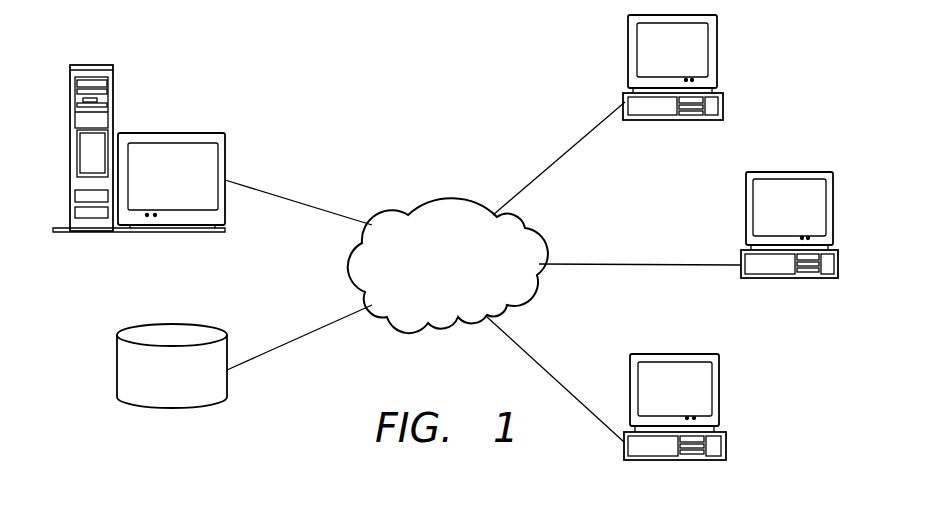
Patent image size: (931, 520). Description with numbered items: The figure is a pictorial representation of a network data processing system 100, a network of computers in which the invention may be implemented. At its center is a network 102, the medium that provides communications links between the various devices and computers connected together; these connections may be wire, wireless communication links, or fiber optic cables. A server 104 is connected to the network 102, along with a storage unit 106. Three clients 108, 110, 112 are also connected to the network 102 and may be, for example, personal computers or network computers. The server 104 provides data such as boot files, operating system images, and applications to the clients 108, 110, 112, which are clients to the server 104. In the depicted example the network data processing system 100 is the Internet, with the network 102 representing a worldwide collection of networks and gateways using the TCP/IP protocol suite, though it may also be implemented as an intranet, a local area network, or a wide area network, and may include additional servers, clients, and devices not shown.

The network data processing system 100 is at (318, 58).
The network 102 is at (423, 290).
The server 104 is at (115, 92).
The storage unit 106 is at (117, 370).
The client 108 is at (717, 60).
The client 110 is at (833, 213).
The client 112 is at (718, 395).